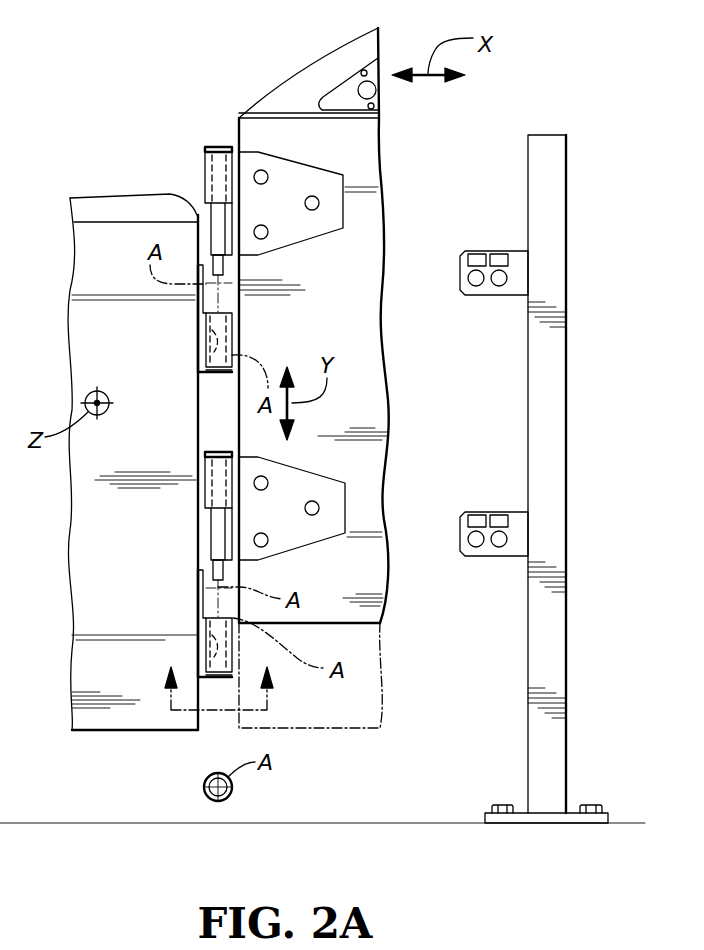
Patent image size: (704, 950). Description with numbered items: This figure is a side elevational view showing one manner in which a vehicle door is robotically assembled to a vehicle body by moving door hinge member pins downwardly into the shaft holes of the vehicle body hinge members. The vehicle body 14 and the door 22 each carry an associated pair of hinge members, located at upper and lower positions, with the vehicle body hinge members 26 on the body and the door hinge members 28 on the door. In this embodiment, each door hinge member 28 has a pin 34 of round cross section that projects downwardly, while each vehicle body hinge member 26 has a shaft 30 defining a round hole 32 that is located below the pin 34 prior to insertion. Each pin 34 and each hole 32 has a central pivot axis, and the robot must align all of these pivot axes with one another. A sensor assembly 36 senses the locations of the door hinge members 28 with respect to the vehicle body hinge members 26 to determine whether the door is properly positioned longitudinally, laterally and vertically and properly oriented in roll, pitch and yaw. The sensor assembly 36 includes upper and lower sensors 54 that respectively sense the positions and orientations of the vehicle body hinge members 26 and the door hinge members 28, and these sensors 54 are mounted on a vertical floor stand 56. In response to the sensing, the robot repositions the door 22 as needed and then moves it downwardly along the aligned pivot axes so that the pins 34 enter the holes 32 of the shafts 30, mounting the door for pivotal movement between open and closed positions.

The vehicle body 14 is at (87, 197).
The door 22 is at (262, 84).
The vehicle body hinge members 26 is at (198, 358).
The door hinge members 28 is at (307, 165).
The shaft 30 is at (238, 329).
The hole 32 is at (204, 347).
The pin 34 is at (211, 236).
The sensor assembly 36 is at (600, 352).
The sensors 54 is at (518, 251).
The vertical floor stand 56 is at (567, 475).